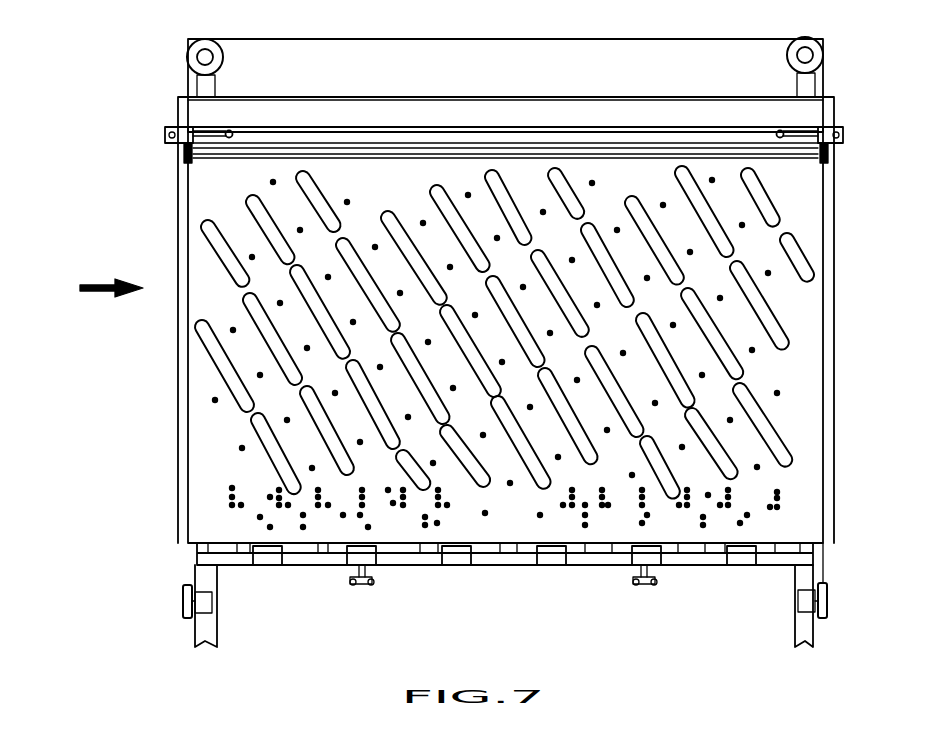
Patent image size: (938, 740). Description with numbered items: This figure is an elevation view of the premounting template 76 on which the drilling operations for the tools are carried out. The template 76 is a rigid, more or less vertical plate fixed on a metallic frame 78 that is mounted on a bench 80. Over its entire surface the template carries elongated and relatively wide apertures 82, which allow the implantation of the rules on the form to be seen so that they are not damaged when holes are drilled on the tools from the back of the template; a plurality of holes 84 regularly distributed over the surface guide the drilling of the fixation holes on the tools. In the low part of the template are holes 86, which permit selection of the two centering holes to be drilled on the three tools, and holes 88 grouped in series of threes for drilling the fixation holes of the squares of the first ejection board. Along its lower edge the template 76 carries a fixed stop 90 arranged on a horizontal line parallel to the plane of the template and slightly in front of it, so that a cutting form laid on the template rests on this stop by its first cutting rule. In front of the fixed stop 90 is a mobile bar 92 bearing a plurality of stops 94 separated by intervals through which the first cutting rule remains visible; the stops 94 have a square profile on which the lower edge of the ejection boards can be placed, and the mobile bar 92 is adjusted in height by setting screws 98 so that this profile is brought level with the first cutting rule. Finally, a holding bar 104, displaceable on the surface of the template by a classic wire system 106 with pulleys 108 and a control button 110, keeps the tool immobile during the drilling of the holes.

The premounting template 76 is at (110, 279).
The metallic frame 78 is at (193, 108).
The bench 80 is at (203, 635).
The apertures 82 is at (260, 442).
The holes 84 is at (233, 330).
The holes 86 is at (303, 530).
The holes 88 is at (568, 495).
The fixed stop 90 is at (503, 548).
The mobile bar 92 is at (597, 560).
The stops 94 is at (552, 560).
The setting screws 98 is at (352, 586).
The holding bar 104 is at (207, 152).
The wire system 106 is at (318, 38).
The pulleys 108 is at (195, 50).
The control button 110 is at (827, 605).